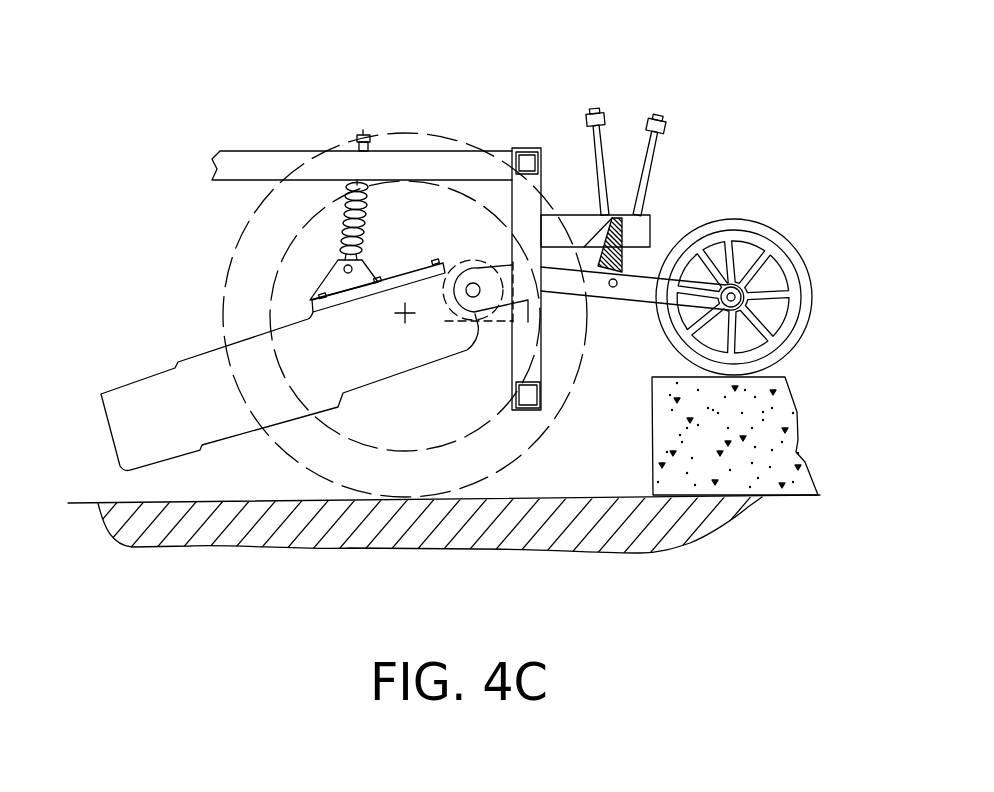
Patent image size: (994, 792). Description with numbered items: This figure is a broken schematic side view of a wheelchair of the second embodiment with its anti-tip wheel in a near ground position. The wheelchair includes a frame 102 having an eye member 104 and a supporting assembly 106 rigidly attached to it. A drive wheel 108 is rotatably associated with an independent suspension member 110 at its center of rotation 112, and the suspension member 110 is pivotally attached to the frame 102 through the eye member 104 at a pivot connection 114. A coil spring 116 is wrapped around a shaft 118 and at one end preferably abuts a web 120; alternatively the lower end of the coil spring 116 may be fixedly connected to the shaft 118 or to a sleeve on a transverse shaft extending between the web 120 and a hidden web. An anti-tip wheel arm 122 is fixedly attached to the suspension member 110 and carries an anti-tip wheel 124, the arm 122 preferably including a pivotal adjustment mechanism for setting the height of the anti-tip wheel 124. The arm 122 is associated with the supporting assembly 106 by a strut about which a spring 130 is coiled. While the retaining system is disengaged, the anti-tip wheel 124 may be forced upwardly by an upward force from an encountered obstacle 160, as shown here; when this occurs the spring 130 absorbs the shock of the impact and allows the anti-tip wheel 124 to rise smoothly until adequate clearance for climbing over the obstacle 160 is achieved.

The frame 102 is at (250, 151).
The eye member 104 is at (470, 320).
The supporting assembly 106 is at (577, 215).
The drive wheel 108 is at (311, 290).
The suspension member 110 is at (110, 444).
The center of rotation 112 is at (398, 320).
The pivot connection 114 is at (474, 283).
The coil spring 116 is at (370, 212).
The shaft 118 is at (360, 133).
The web 120 is at (318, 282).
The anti-tip wheel arm 122 is at (629, 312).
The anti-tip wheel 124 is at (813, 306).
The spring 130 is at (622, 233).
The obstacle 160 is at (788, 445).